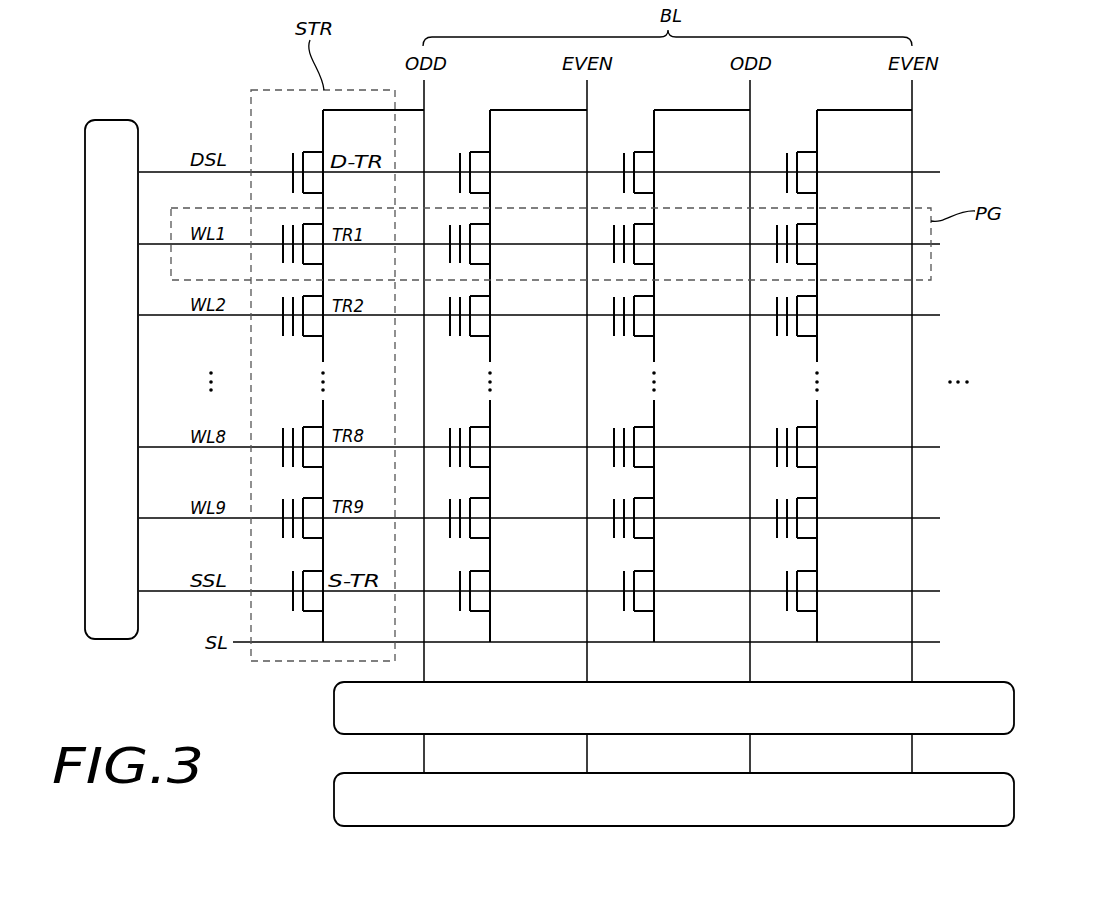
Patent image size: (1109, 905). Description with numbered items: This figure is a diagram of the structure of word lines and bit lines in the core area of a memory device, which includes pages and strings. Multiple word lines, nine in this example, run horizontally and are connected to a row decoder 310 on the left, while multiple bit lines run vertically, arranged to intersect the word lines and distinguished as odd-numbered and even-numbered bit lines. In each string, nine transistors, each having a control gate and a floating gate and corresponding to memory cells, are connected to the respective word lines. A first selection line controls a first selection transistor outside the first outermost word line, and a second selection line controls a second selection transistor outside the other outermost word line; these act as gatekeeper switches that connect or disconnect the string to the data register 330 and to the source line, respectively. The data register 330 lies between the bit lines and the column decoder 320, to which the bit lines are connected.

The row decoder 310 is at (112, 120).
The column decoder 320 is at (1014, 800).
The data register 330 is at (1014, 708).